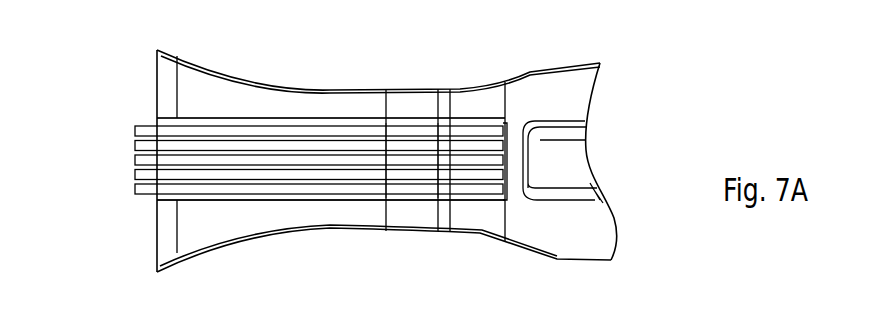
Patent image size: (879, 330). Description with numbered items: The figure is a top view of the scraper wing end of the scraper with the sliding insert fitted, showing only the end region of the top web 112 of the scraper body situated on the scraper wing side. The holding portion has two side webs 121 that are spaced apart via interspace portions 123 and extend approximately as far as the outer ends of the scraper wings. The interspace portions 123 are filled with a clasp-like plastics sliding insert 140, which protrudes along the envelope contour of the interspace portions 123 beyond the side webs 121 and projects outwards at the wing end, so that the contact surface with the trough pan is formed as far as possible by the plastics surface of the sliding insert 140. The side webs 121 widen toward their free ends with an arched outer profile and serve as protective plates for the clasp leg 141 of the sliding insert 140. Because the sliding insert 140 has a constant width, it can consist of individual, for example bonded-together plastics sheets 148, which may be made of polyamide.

The top web 112 is at (577, 84).
The side webs 121 is at (340, 107).
The interspace portions 123 is at (280, 210).
The sliding insert 140 is at (269, 110).
The upper clasp leg 141 is at (408, 146).
The plastics sheets 148 is at (290, 145).